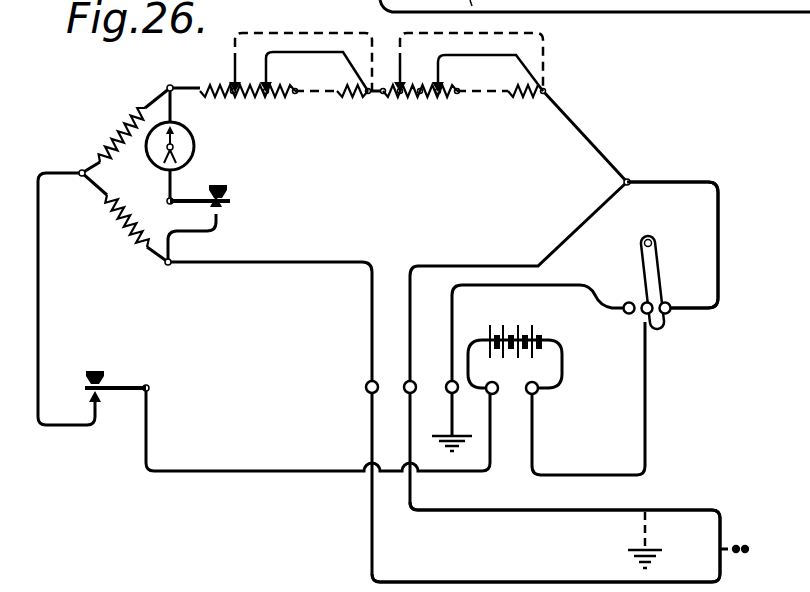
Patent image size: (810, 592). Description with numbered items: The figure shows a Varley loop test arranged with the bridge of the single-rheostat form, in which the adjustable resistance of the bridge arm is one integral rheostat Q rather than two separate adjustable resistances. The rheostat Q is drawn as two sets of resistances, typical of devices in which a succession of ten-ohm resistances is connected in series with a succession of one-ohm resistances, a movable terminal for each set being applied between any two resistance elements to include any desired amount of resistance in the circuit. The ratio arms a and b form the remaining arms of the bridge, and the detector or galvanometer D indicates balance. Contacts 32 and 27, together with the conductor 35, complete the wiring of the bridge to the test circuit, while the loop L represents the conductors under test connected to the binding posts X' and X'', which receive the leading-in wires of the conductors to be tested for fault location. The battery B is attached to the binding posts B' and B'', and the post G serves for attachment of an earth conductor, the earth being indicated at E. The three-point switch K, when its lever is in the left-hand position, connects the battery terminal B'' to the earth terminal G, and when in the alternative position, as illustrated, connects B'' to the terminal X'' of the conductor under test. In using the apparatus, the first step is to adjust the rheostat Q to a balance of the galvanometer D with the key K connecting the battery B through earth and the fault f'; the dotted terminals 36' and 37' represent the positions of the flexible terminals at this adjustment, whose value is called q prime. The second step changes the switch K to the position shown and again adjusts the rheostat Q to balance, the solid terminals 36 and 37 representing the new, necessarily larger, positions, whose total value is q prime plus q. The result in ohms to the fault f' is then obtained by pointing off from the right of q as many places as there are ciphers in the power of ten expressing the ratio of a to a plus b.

The rheostat Q is at (413, 92).
The dotted terminal 36' is at (280, 62).
The solid terminal 36 is at (314, 72).
The dotted terminal 37' is at (468, 62).
The solid terminal 37 is at (487, 73).
The bridge arm resistance b is at (126, 118).
The bridge arm resistance a is at (131, 232).
The detector or galvanometer D is at (185, 138).
The contact 32 is at (232, 197).
The contact 27 is at (96, 408).
The conductor loop 35 is at (718, 222).
The three-point switch K is at (653, 272).
The binding post X' is at (360, 375).
The binding post X'' is at (398, 375).
The earth terminal post G is at (448, 385).
The earth E is at (450, 432).
The battery B is at (515, 343).
The binding post B' is at (501, 400).
The binding post B'' is at (544, 400).
The line loop L is at (488, 517).
The fault f' is at (632, 540).